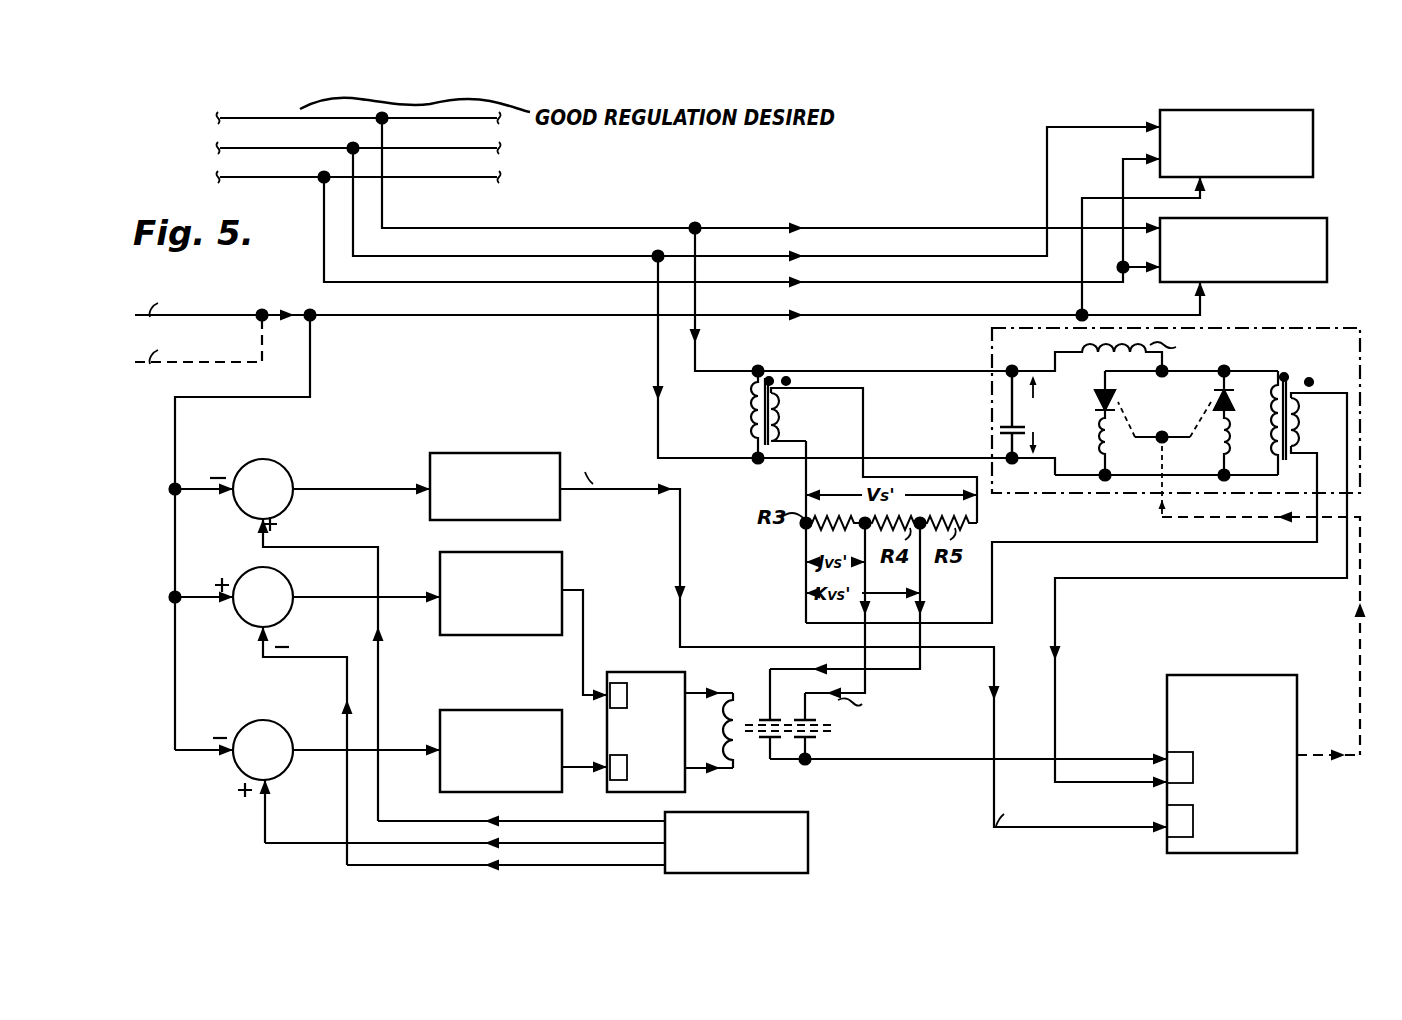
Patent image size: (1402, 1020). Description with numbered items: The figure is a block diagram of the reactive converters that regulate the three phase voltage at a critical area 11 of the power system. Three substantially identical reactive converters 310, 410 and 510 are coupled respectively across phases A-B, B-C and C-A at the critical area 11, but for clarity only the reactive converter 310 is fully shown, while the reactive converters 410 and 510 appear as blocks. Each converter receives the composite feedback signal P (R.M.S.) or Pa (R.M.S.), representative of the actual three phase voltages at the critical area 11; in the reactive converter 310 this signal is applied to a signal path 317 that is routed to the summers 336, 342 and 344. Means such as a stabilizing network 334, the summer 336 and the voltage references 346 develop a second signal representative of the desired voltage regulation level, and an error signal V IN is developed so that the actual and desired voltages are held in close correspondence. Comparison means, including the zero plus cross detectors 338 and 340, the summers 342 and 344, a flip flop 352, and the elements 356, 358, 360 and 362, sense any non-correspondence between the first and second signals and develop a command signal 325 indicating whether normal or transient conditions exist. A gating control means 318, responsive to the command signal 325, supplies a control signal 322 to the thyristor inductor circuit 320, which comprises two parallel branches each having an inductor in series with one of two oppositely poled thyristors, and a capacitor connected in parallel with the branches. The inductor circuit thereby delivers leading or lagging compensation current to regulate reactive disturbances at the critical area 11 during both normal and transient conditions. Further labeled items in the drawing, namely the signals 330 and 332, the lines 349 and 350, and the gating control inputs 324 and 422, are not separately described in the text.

The critical area 11 is at (414, 191).
The reactive converter 310 is at (862, 352).
The signal path 317 is at (311, 366).
The gating control means 318 is at (1242, 678).
The thyristor inductor circuit 320 is at (1272, 330).
The control signal 322 is at (1175, 521).
The gating control input terminal 324 is at (1194, 783).
The command signal 325 is at (1120, 780).
The low signal 330 is at (583, 655).
The high signal 332 is at (600, 767).
The second signal developing means 334 is at (472, 453).
The summer 336 is at (269, 464).
The comparison means 338 is at (562, 561).
The comparison means 340 is at (436, 734).
The summer 342 is at (270, 582).
The summer 344 is at (256, 722).
The second signal developing means 346 is at (810, 836).
The reference voltage line 349 is at (331, 843).
The reference voltage line 350 is at (553, 859).
The comparison means 352 is at (670, 672).
The comparison means 356 is at (758, 745).
The comparison means 358 is at (826, 745).
The comparison means 360 is at (738, 400).
The comparison means 362 is at (1295, 381).
The reactive converter 410 is at (1254, 110).
The gating control input terminal 422 is at (1194, 833).
The reactive converter 510 is at (1249, 219).